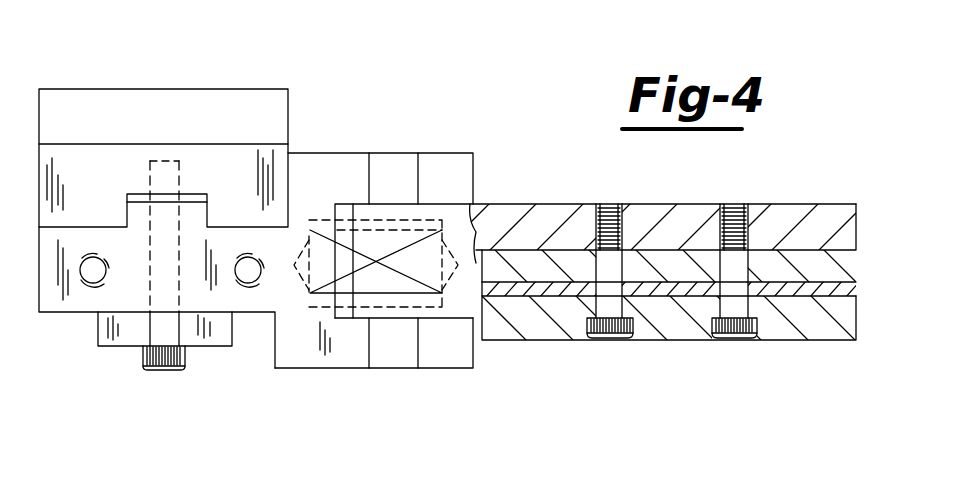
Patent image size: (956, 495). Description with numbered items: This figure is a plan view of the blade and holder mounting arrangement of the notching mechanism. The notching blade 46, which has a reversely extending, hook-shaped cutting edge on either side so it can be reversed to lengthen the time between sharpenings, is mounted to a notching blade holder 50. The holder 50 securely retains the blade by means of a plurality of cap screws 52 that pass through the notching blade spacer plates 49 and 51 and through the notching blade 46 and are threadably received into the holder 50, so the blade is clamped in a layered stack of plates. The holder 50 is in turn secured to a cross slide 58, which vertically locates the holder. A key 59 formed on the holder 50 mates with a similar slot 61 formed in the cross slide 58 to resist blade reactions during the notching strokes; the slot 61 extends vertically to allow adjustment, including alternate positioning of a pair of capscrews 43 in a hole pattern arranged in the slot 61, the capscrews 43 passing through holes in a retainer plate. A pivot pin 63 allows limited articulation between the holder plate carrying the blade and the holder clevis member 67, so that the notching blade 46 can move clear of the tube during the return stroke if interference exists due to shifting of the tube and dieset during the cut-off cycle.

The cross slide 58 is at (137, 89).
The slot 61 is at (171, 160).
The key 59 is at (134, 212).
The capscrews 43 is at (170, 372).
The holder clevis member 67 is at (340, 153).
The pivot pin 63 is at (398, 158).
The notching blade holder 50 is at (858, 218).
The notching blade spacer plate 51 is at (852, 258).
The notching blade 46 is at (850, 288).
The notching blade spacer plate 49 is at (847, 327).
The cap screws 52 is at (615, 339).